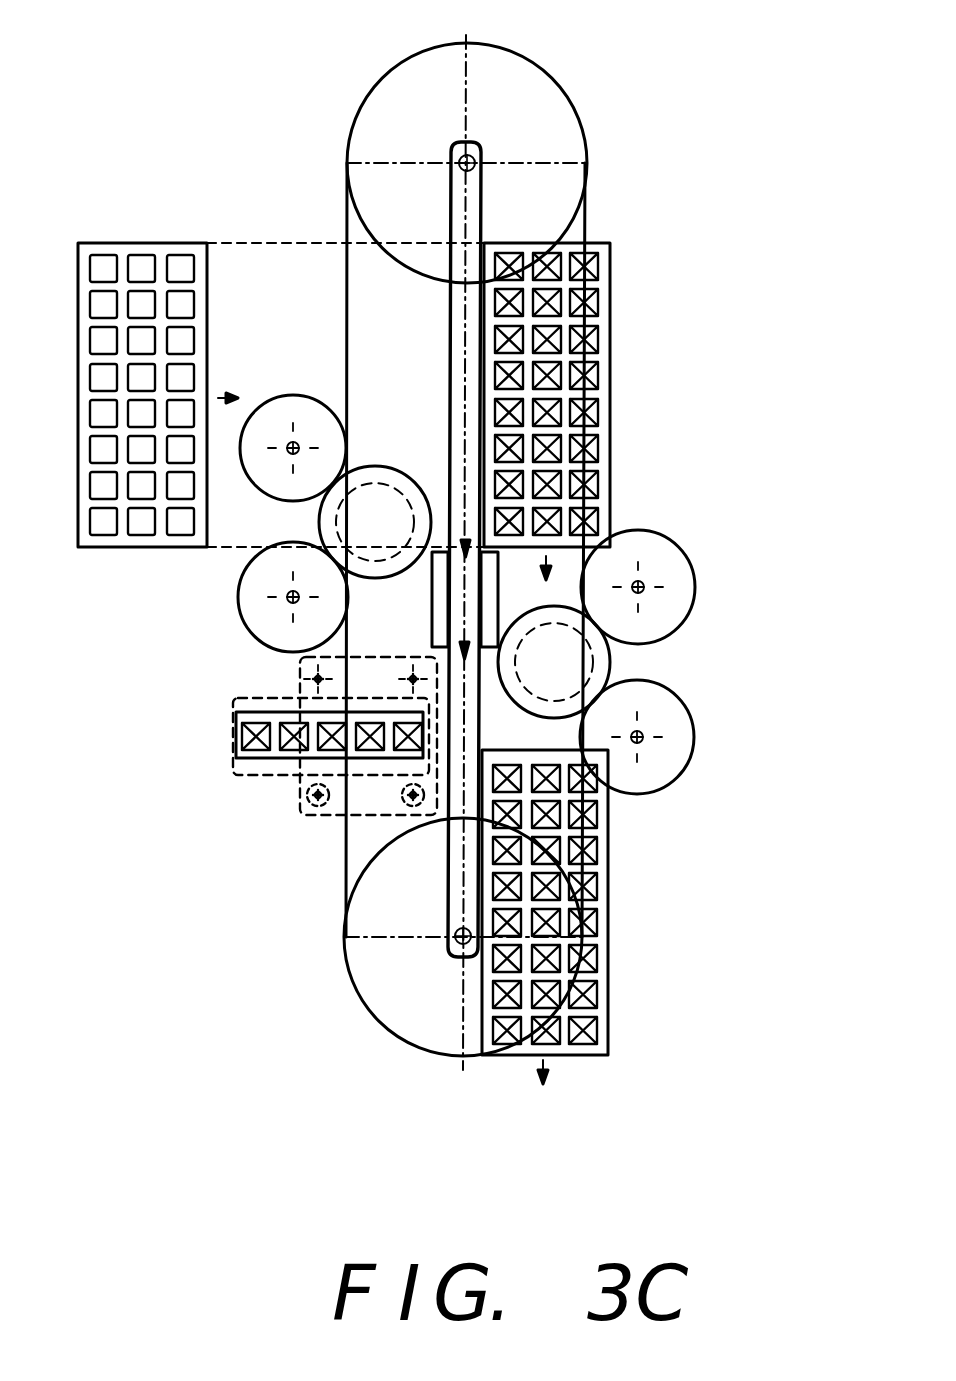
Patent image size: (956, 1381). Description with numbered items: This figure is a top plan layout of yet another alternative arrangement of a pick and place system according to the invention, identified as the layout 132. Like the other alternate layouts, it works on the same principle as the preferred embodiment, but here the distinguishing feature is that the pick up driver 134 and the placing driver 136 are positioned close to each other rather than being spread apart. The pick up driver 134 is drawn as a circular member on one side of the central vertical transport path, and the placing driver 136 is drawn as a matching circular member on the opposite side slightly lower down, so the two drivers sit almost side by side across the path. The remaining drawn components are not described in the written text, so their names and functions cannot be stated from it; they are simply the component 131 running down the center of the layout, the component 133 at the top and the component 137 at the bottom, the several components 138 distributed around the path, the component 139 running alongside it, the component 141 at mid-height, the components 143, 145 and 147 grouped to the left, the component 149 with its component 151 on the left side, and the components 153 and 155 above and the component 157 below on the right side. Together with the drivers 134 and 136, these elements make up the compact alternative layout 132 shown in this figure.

The central guide bar 131 is at (455, 332).
The layout 132 is at (648, 98).
The upper drive roller 133 is at (363, 131).
The pick up driver 134 is at (393, 468).
The placing driver 136 is at (600, 662).
The lower drive roller 137 is at (410, 1029).
The guide rollers 138 is at (318, 380).
The transport belt 139 is at (342, 866).
The guide plates 141 is at (432, 608).
The transfer station housing 143 is at (331, 814).
The transfer carriage 145 is at (234, 772).
The transfer bar with holders 147 is at (235, 719).
The left magazine 149 is at (140, 243).
The magazine compartments 151 is at (98, 518).
The upper right magazine 153 is at (613, 404).
The loaded magazine compartments 155 is at (597, 303).
The lower right magazine 157 is at (611, 975).